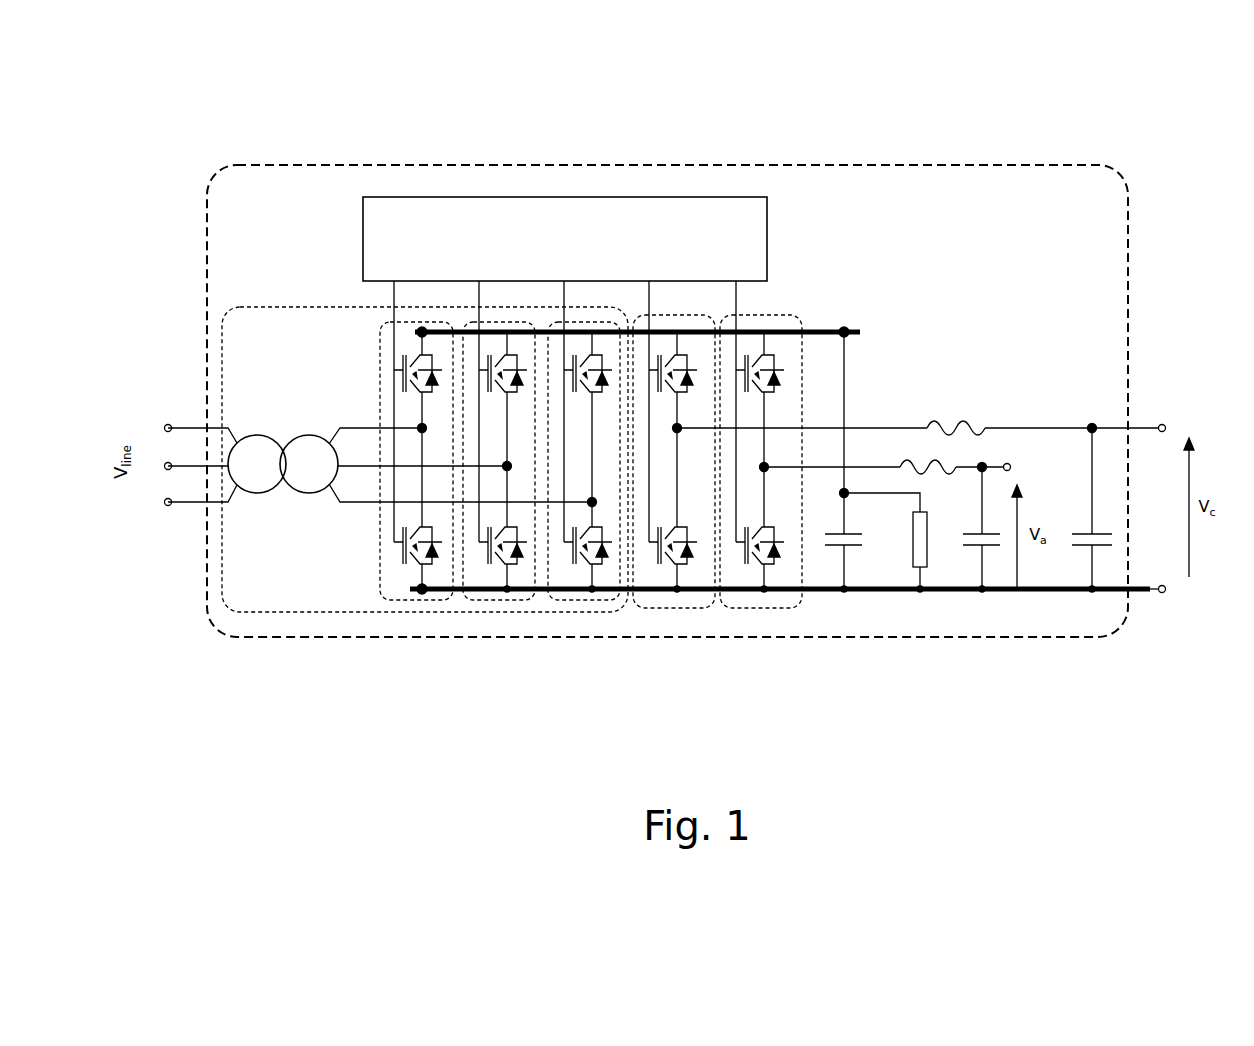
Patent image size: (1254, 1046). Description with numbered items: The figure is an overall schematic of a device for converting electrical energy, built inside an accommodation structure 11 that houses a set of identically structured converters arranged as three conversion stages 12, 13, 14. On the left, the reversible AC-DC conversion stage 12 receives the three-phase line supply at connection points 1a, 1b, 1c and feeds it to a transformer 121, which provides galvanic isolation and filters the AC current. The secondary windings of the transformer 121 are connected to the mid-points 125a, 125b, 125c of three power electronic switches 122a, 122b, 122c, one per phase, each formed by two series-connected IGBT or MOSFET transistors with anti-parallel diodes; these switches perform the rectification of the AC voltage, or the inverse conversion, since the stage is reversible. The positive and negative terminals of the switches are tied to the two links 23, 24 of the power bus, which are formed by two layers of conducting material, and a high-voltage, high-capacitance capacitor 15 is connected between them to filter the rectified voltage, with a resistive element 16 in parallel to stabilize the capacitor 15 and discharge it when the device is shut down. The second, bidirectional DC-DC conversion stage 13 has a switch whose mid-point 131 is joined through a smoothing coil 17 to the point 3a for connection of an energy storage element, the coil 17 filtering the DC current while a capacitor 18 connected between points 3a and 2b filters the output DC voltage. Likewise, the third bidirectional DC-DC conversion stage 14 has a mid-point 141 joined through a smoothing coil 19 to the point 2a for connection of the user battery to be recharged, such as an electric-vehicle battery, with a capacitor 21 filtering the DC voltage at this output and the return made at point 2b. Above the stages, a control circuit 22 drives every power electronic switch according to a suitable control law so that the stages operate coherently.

The accommodation structure 11 is at (697, 368).
The reversible AC-DC conversion stage 12 is at (425, 418).
The transformer 121 is at (380, 510).
The power electronic switch 122a is at (393, 511).
The power electronic switch 122b is at (488, 513).
The power electronic switch 122c is at (578, 513).
The first phase connection node 125a is at (376, 396).
The second phase connection node 125b is at (546, 450).
The third phase connection node 125c is at (617, 477).
The bidirectional DC-DC conversion stage 13 is at (761, 514).
The mid-point of the switch 131 is at (793, 426).
The bidirectional DC-DC conversion stage 14 is at (674, 511).
The mid-point of the switch 141 is at (703, 454).
The high-voltage capacitor 15 is at (866, 516).
The resistive element 16 is at (919, 588).
The smoothing coil 17 is at (883, 419).
The capacitor 18 is at (1022, 574).
The smoothing coil 19 is at (917, 389).
The capacitor 21 is at (1103, 510).
The control circuit 22 is at (591, 324).
The link of the power bus 23 is at (673, 295).
The link of the power bus 24 is at (789, 632).
The AC supply connection point 1a is at (170, 419).
The AC supply connection point 1b is at (169, 457).
The AC supply connection point 1c is at (170, 493).
The connection point for user battery 2a is at (1129, 418).
The common connection point 2b is at (1159, 578).
The connection point for storage element 3a is at (1022, 466).